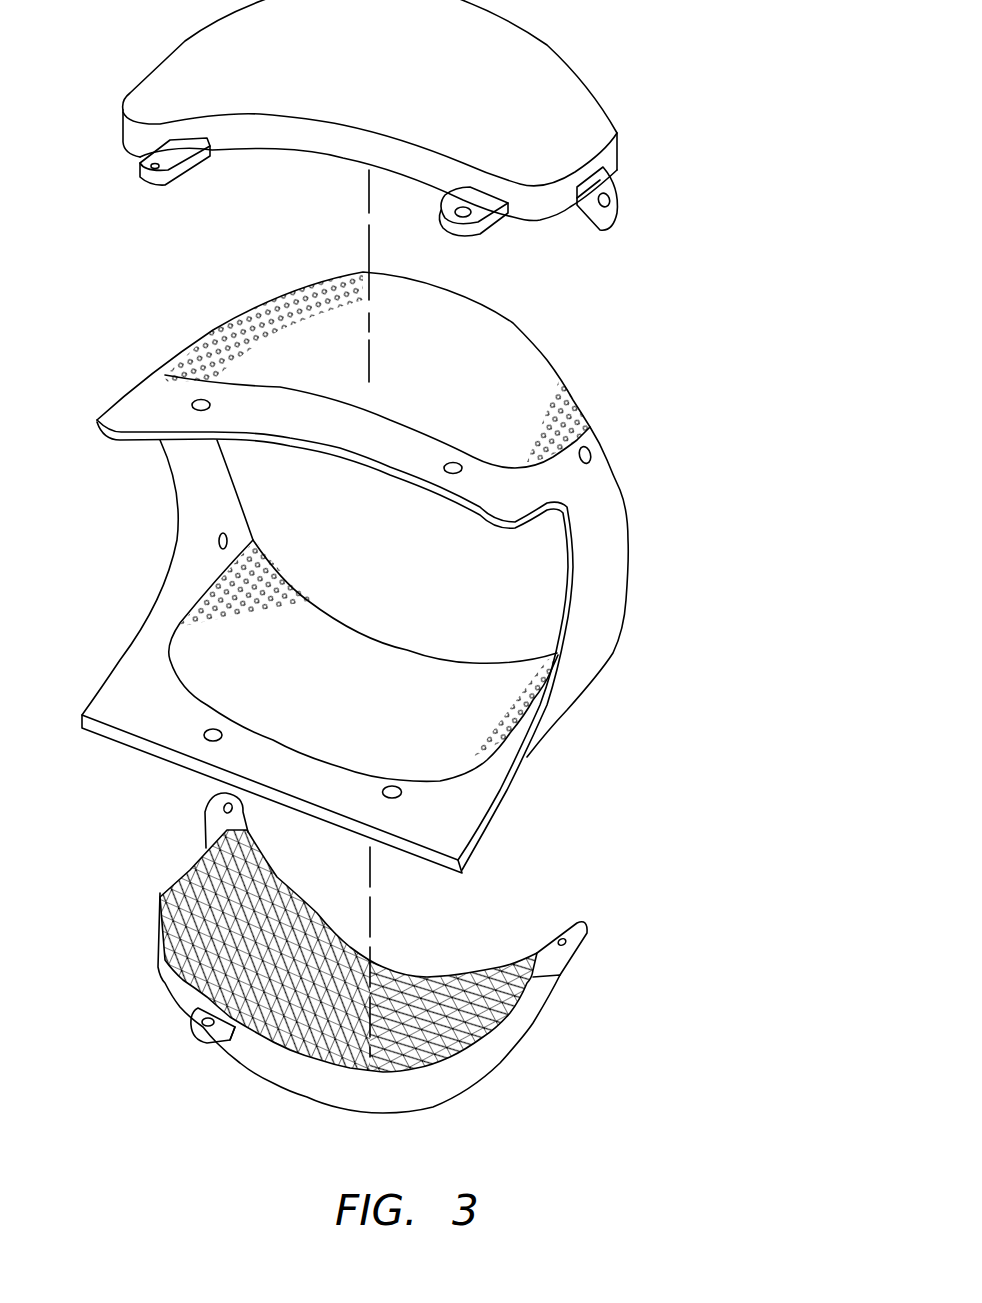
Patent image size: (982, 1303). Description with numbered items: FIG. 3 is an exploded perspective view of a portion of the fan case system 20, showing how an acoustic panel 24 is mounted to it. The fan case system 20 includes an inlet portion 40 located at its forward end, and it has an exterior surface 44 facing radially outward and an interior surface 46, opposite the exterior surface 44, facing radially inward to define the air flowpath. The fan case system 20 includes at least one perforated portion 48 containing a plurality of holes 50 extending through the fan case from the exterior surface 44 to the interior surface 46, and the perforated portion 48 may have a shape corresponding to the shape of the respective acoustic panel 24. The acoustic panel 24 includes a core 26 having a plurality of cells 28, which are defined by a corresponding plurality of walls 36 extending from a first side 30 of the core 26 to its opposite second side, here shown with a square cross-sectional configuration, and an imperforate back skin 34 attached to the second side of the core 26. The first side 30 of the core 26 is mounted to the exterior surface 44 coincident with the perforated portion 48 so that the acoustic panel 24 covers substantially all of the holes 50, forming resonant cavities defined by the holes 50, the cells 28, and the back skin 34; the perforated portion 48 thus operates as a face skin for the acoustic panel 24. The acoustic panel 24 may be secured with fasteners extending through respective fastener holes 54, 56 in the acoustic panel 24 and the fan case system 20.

The fan case system 20 is at (749, 317).
The acoustic panel 24 is at (417, 556).
The core 26 is at (410, 997).
The plurality of cells 28 is at (222, 920).
The first side 30 is at (201, 943).
The imperforate back skin 34 is at (528, 155).
The plurality of walls 36 is at (377, 973).
The inlet portion 40 is at (380, 556).
The exterior surface 44 is at (507, 497).
The interior surface 46 is at (125, 683).
The perforated portion 48 is at (500, 393).
The plurality of holes 50 is at (240, 330).
The fastener hole 54 is at (630, 202).
The fastener hole 56 is at (593, 450).